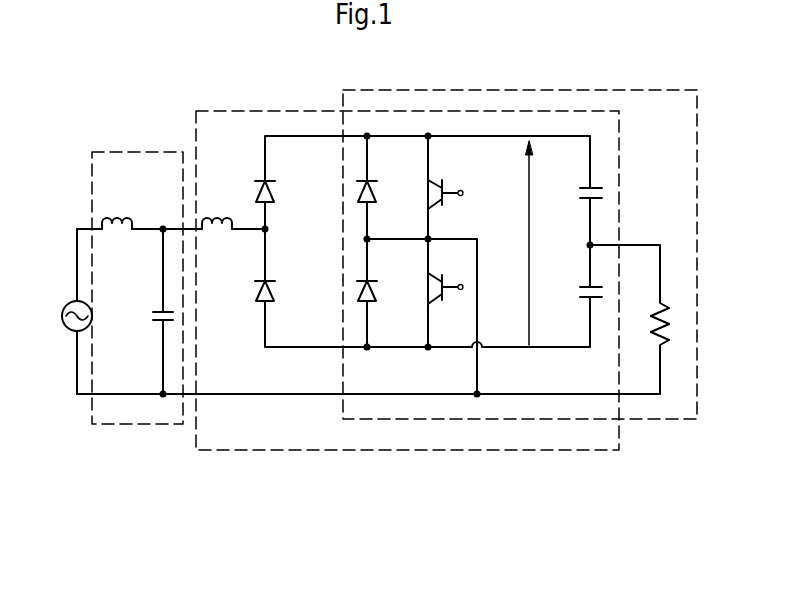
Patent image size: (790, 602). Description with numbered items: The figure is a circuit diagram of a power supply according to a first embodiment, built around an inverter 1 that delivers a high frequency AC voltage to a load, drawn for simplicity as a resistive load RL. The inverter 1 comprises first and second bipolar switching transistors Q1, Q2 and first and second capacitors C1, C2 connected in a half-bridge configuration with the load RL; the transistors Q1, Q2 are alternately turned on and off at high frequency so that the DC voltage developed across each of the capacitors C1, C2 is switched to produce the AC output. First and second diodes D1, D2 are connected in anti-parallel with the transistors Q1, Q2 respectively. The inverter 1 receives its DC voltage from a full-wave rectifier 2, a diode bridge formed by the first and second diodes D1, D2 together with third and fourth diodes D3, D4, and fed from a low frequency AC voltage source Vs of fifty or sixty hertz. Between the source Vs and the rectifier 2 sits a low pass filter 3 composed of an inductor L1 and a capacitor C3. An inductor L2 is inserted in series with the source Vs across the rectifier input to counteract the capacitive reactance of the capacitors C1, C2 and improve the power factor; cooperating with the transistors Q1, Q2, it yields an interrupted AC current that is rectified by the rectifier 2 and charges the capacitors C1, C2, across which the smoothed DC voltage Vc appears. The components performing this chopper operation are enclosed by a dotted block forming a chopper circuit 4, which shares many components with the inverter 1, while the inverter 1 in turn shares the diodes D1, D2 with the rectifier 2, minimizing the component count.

The inverter 1 is at (565, 90).
The full-wave rectifier 2 is at (310, 347).
The low pass filter 3 is at (130, 425).
The chopper circuit 4 is at (218, 111).
The AC voltage source Vs is at (64, 311).
The inductor L1 is at (118, 207).
The inductor L2 is at (217, 207).
The capacitor C3 is at (150, 312).
The first diode D1 is at (384, 186).
The second diode D2 is at (384, 282).
The third diode D3 is at (282, 186).
The fourth diode D4 is at (282, 282).
The first switching transistor Q1 is at (447, 181).
The second switching transistor Q2 is at (448, 301).
The capacitor voltage Vc is at (516, 243).
The first capacitor C1 is at (579, 190).
The second capacitor C2 is at (577, 295).
The resistive load RL is at (641, 319).